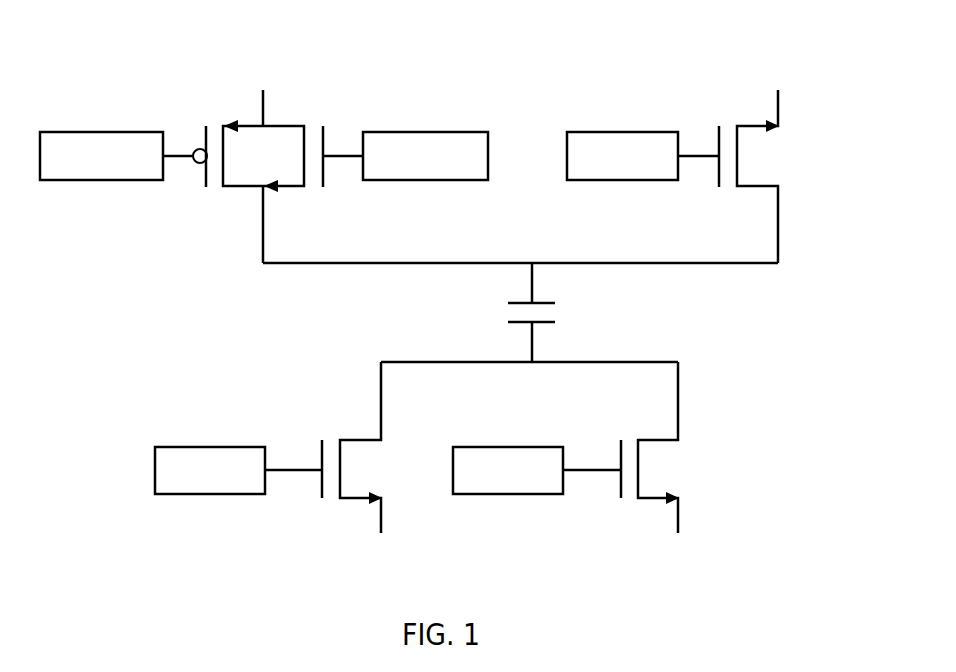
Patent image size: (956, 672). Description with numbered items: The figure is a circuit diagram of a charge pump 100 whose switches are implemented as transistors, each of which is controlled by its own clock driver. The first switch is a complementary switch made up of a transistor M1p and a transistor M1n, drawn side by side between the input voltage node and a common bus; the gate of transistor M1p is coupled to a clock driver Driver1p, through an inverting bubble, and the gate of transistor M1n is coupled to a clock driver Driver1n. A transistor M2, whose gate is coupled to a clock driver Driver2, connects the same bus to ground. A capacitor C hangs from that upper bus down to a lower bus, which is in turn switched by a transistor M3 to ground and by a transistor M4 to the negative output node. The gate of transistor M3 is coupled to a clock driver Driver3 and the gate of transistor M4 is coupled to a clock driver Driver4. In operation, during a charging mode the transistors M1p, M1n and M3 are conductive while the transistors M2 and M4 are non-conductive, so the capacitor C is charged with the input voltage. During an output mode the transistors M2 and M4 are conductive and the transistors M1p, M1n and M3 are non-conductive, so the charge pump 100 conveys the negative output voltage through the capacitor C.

The charge pump 100 is at (420, 288).
The transistor M1p is at (242, 174).
The transistor M1n is at (293, 177).
The transistor M2 is at (749, 176).
The transistor M3 is at (350, 447).
The transistor M4 is at (648, 447).
The capacitor C is at (546, 312).
The clock driver Driver1p is at (123, 156).
The clock driver Driver1n is at (405, 156).
The clock driver Driver2 is at (643, 156).
The clock driver Driver3 is at (238, 470).
The clock driver Driver4 is at (537, 470).